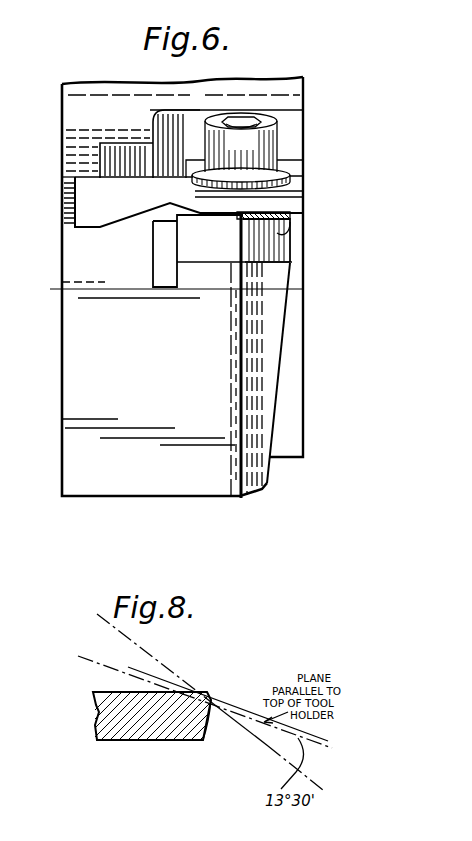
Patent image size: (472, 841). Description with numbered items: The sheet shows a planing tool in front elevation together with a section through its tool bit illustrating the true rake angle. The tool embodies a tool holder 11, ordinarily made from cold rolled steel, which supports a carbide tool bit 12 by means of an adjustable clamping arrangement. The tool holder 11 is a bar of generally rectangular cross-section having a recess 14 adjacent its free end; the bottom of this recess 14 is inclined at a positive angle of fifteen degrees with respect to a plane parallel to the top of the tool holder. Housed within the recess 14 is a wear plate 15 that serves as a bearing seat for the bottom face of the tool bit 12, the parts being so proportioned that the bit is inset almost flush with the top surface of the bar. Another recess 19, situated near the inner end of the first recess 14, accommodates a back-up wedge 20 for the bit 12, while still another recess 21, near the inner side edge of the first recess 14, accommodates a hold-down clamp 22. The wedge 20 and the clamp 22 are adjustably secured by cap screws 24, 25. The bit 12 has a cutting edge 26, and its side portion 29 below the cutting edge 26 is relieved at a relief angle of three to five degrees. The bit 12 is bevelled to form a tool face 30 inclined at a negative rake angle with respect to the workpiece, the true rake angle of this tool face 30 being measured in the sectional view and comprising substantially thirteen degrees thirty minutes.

In FIG. 6, the tool holder 11 is at (288, 91).
In FIG. 6, the tool bit 12 is at (192, 243).
In FIG. 8, the tool bit 12 is at (144, 722).
In FIG. 6, the recess 14 is at (240, 318).
In FIG. 6, the wear plate 15 is at (206, 310).
In FIG. 6, the recess 19 is at (290, 132).
In FIG. 6, the back-up wedge 20 is at (283, 203).
In FIG. 6, the recess 21 is at (66, 178).
In FIG. 6, the hold-down clamp 22 is at (78, 201).
In FIG. 6, the cap screw 24 is at (229, 118).
In FIG. 6, the cap screw 25 is at (112, 170).
In FIG. 6, the cutting edge 26 is at (283, 222).
In FIG. 8, the cutting edge 26 is at (213, 703).
In FIG. 6, the side portion 29 is at (290, 262).
In FIG. 8, the side portion 29 is at (208, 733).
In FIG. 6, the tool face 30 is at (290, 216).
In FIG. 8, the tool face 30 is at (211, 699).